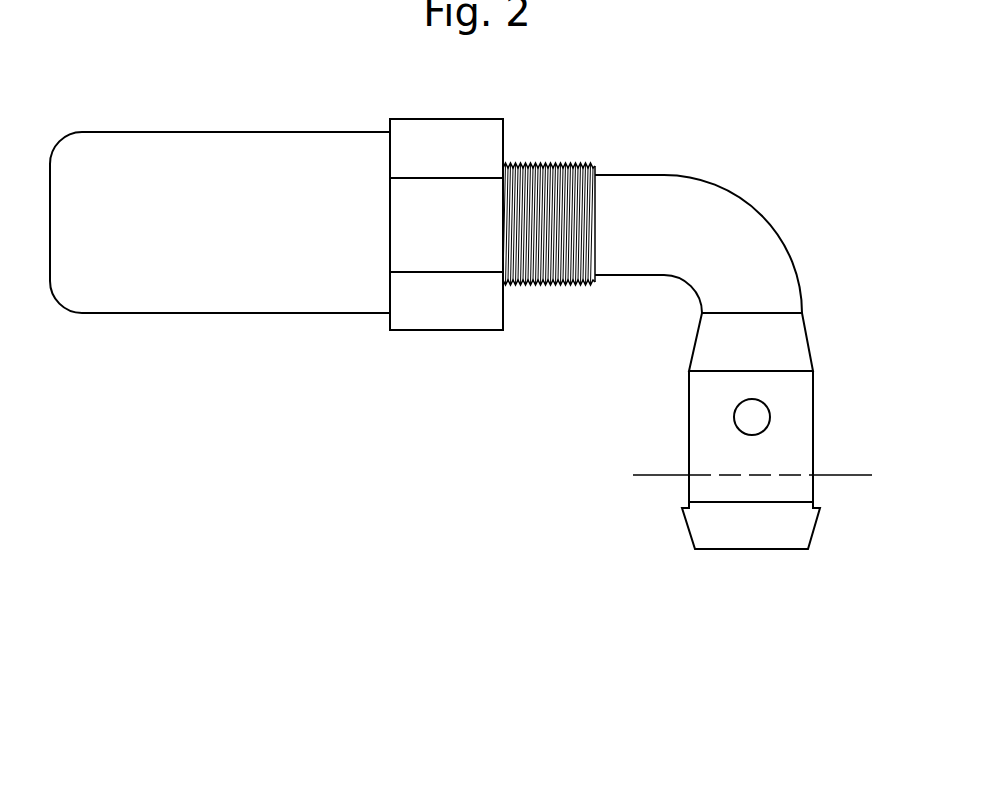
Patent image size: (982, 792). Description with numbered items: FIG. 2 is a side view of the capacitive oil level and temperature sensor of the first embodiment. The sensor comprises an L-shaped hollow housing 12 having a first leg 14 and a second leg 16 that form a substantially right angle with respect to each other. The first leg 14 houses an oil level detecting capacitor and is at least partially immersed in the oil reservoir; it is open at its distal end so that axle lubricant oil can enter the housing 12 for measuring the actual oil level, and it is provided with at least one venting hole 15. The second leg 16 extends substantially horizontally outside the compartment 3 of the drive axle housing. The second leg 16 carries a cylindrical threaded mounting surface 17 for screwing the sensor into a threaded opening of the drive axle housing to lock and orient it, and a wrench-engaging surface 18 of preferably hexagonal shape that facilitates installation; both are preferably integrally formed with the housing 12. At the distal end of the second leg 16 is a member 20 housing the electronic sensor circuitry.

The compartment 3 is at (642, 475).
The L-shaped hollow housing 12 is at (660, 177).
The first leg 14 is at (815, 388).
The venting hole 15 is at (757, 414).
The second leg 16 is at (556, 165).
The threaded mounting surface 17 is at (545, 288).
The wrench-engaging surface 18 is at (444, 323).
The member 20 is at (210, 305).